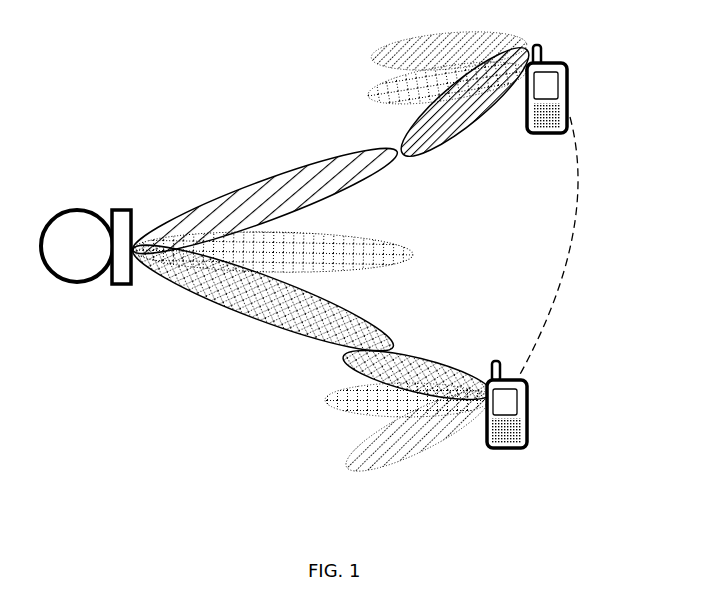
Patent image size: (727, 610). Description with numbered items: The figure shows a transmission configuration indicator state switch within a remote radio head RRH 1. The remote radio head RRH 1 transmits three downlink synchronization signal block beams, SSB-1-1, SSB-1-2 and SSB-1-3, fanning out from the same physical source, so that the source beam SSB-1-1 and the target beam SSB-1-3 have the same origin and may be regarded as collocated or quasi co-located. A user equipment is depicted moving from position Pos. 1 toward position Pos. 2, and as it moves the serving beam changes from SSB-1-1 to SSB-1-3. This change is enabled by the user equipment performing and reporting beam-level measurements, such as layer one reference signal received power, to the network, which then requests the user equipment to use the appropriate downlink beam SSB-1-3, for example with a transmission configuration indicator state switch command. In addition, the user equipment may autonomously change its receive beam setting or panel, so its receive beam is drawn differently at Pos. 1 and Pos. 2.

The remote radio head RRH 1 is at (86, 224).
The synchronization signal block beam 1-1 SSB-1-1 is at (265, 201).
The synchronization signal block beam 1-2 SSB-1-2 is at (273, 244).
The synchronization signal block beam 1-3 SSB-1-3 is at (263, 302).
The position 1 Pos. 1 is at (509, 98).
The position 2 Pos. 2 is at (453, 412).